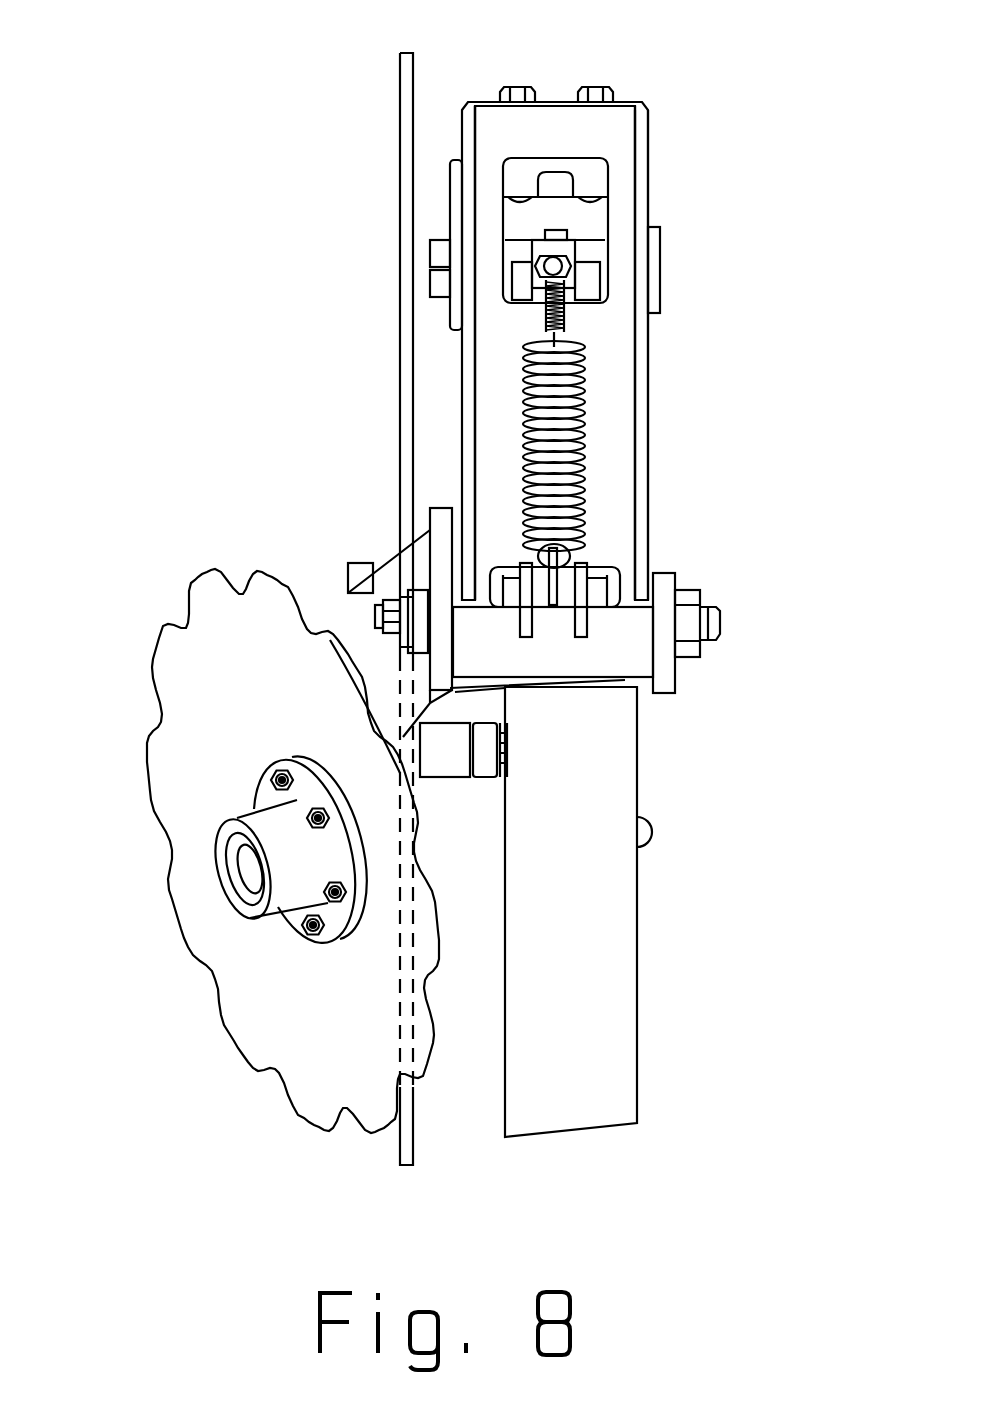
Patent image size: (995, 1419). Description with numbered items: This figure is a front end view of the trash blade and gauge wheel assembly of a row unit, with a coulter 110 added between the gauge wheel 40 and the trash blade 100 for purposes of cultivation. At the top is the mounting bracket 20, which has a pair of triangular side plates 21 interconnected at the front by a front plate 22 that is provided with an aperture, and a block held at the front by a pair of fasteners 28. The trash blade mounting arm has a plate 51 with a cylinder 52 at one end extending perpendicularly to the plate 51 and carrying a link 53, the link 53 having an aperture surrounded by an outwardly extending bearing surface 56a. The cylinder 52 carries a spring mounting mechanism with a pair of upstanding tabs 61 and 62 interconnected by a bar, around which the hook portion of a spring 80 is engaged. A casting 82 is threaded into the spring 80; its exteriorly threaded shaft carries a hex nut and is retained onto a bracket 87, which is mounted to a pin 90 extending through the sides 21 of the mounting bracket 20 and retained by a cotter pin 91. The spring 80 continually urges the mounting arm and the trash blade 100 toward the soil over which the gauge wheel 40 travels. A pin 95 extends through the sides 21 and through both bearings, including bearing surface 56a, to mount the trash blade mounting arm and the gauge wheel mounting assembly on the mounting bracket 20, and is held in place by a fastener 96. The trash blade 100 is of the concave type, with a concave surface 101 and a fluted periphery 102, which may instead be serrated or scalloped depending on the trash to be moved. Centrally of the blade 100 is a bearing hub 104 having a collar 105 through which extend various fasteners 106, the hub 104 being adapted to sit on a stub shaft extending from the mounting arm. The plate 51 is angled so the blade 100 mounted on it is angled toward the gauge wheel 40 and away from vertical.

The mounting bracket 20 is at (660, 162).
The triangular side plates 21 is at (648, 510).
The front plate 22 is at (625, 358).
The fasteners 28 is at (592, 86).
The gauge wheel 40 is at (637, 968).
The plate 51 is at (438, 492).
The cylinder 52 is at (607, 667).
The link 53 is at (667, 680).
The bearing surface 56a is at (682, 592).
The upstanding tab 61 is at (515, 612).
The upstanding tab 62 is at (587, 612).
The spring 80 is at (585, 458).
The casting 82 is at (565, 236).
The bracket 87 is at (577, 270).
The pin 90 is at (446, 277).
The cotter pin 91 is at (462, 212).
The pin 95 is at (374, 618).
The fastener 96 is at (397, 640).
The trash blade 100 is at (237, 851).
The concave surface 101 is at (240, 851).
The fluted periphery 102 is at (167, 847).
The bearing hub 104 is at (278, 903).
The collar 105 is at (318, 777).
The fasteners 106 is at (266, 778).
The coulter 110 is at (404, 380).